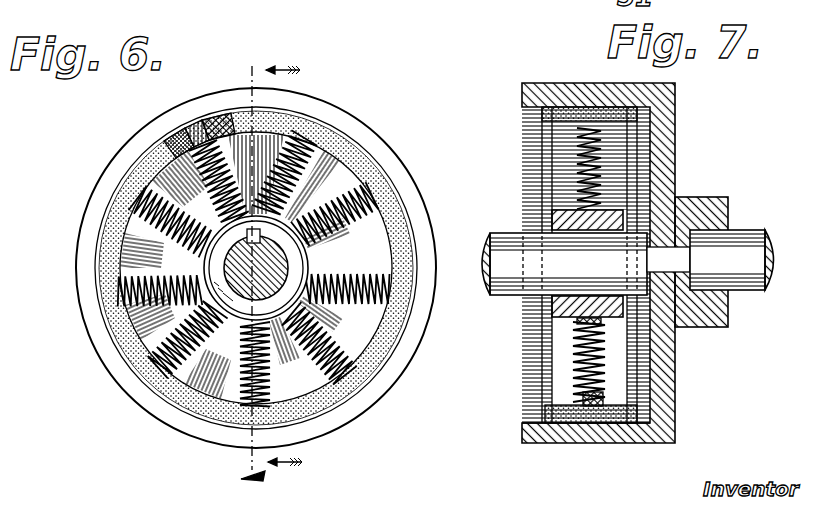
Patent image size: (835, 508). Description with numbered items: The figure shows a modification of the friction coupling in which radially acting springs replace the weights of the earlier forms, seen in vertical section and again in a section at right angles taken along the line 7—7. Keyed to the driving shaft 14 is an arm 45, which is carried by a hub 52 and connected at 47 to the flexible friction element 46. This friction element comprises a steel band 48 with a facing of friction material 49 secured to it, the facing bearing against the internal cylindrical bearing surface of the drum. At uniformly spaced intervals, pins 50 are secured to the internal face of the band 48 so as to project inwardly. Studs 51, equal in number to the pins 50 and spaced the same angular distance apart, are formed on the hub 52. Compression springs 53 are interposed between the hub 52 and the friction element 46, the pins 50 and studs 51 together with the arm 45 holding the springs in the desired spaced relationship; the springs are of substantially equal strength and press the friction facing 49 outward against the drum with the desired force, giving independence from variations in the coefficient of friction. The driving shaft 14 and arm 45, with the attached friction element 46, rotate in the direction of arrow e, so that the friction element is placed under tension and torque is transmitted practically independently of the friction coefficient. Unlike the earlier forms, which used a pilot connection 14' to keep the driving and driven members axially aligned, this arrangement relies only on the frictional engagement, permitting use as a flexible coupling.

In FIG. 6, the section line 7— 7 is at (271, 271).
In FIG. 6, the driving shaft 14 is at (290, 268).
In FIG. 7, the driving shaft 14 is at (558, 278).
In FIG. 7, the pilot connection 14' is at (710, 221).
In FIG. 6, the arm 45 is at (172, 221).
In FIG. 7, the arm 45 is at (607, 163).
In FIG. 6, the flexible friction element 46 is at (97, 235).
In FIG. 7, the flexible friction element 46 is at (562, 420).
In FIG. 6, the connection 47 is at (193, 117).
In FIG. 6, the steel band 48 is at (122, 347).
In FIG. 7, the steel band 48 is at (627, 353).
In FIG. 6, the facing of friction material 49 is at (365, 157).
In FIG. 7, the facing of friction material 49 is at (630, 443).
In FIG. 6, the pins 50 is at (393, 280).
In FIG. 7, the pins 50 is at (592, 420).
In FIG. 6, the studs 51 is at (290, 203).
In FIG. 7, the studs 51 is at (580, 327).
In FIG. 6, the hub 52 is at (290, 290).
In FIG. 7, the hub 52 is at (625, 313).
In FIG. 6, the compression springs 53 is at (256, 268).
In FIG. 7, the compression springs 53 is at (557, 167).
In FIG. 6, the arrow e is at (243, 232).